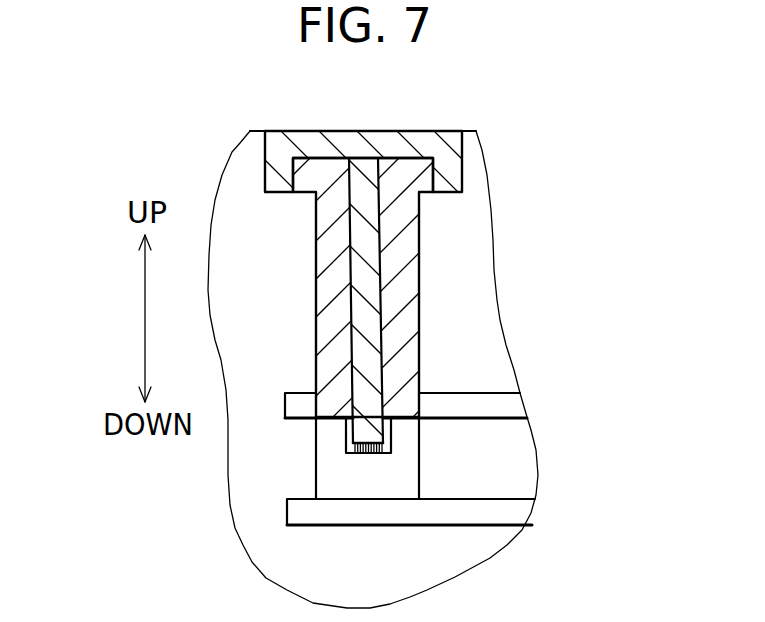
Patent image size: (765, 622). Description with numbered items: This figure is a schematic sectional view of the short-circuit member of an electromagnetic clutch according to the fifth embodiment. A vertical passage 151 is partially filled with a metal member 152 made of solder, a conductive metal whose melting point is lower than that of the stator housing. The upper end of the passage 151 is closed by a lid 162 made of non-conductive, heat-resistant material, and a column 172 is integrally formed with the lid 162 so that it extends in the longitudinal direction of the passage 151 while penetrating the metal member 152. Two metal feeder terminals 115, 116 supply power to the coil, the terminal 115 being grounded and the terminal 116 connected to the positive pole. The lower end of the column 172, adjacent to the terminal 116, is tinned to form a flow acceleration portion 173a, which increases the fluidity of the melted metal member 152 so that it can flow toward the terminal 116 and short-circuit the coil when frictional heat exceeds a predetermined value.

The lid 162 is at (435, 146).
The metal member 152 is at (408, 234).
The column 172 is at (384, 304).
The feeder terminal 115 is at (485, 403).
The flow acceleration portion 173a is at (379, 457).
The passage 151 is at (390, 476).
The feeder terminal 116 is at (498, 513).